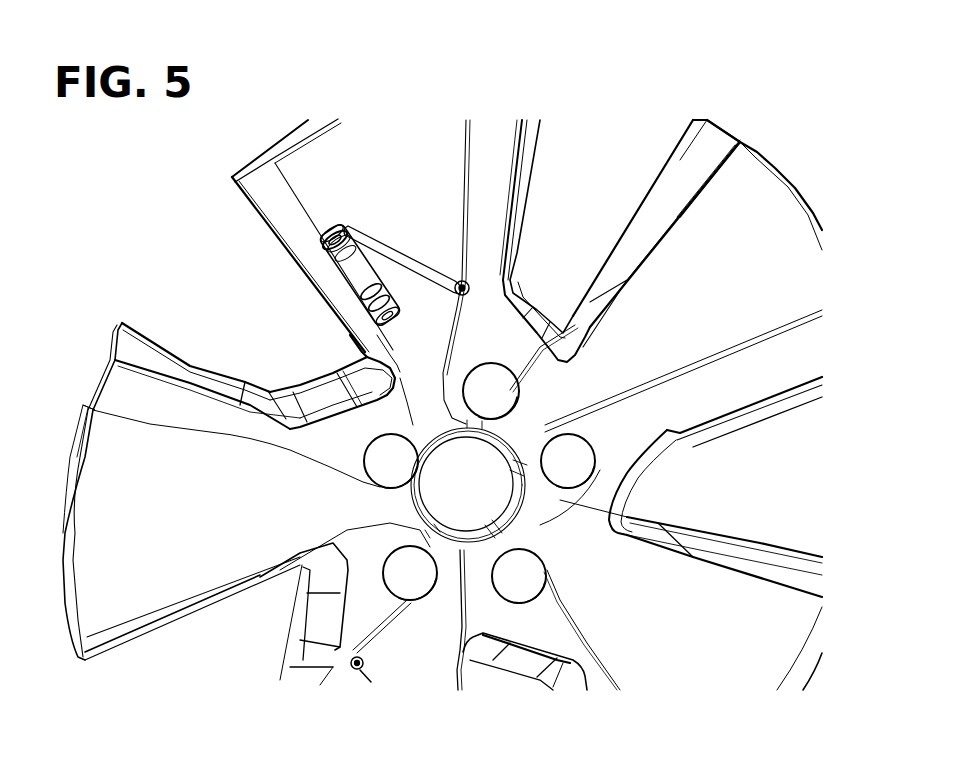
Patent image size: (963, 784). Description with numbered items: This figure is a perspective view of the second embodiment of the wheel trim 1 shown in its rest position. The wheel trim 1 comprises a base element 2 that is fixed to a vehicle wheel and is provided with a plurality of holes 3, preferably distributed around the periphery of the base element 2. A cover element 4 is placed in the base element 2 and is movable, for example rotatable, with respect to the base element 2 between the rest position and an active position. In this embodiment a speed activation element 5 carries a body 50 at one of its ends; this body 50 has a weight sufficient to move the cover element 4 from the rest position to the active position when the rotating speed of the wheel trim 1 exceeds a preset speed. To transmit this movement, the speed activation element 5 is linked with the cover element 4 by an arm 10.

The wheel trim 1 is at (140, 285).
The base element 2 is at (310, 180).
The holes 3 is at (263, 348).
The cover element 4 is at (250, 197).
The speed activation element 5 is at (353, 273).
The body 50 is at (335, 233).
The arm 10 is at (395, 250).